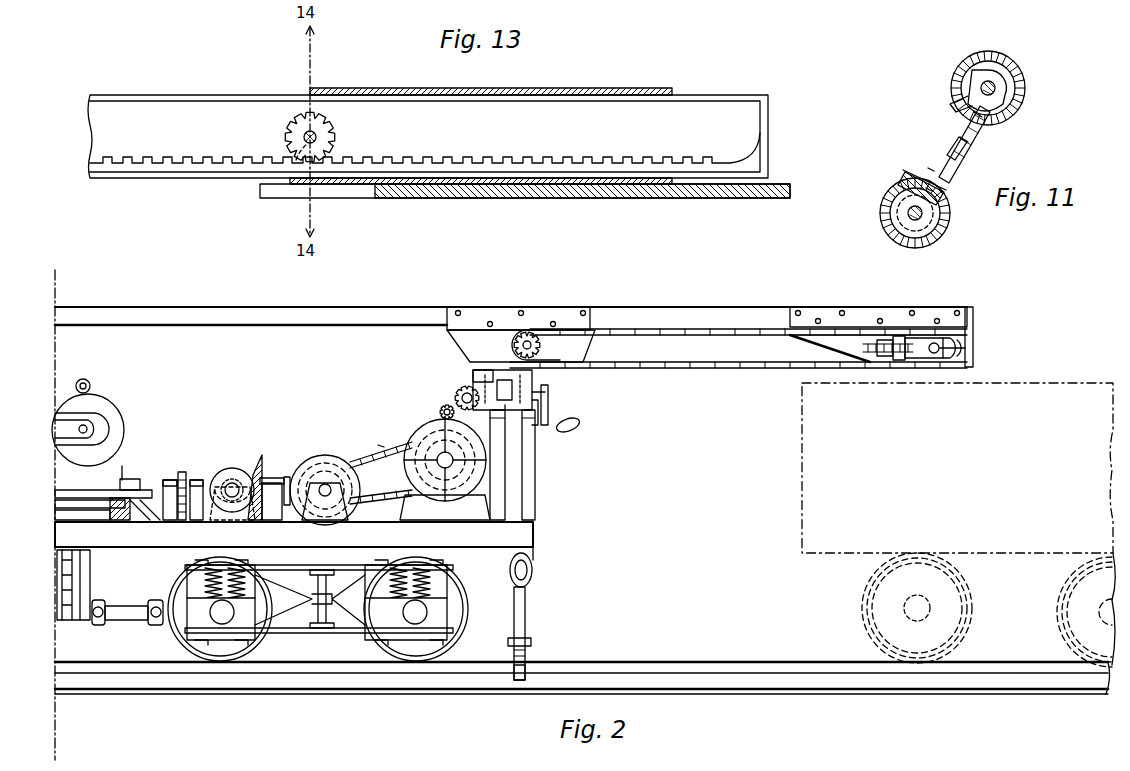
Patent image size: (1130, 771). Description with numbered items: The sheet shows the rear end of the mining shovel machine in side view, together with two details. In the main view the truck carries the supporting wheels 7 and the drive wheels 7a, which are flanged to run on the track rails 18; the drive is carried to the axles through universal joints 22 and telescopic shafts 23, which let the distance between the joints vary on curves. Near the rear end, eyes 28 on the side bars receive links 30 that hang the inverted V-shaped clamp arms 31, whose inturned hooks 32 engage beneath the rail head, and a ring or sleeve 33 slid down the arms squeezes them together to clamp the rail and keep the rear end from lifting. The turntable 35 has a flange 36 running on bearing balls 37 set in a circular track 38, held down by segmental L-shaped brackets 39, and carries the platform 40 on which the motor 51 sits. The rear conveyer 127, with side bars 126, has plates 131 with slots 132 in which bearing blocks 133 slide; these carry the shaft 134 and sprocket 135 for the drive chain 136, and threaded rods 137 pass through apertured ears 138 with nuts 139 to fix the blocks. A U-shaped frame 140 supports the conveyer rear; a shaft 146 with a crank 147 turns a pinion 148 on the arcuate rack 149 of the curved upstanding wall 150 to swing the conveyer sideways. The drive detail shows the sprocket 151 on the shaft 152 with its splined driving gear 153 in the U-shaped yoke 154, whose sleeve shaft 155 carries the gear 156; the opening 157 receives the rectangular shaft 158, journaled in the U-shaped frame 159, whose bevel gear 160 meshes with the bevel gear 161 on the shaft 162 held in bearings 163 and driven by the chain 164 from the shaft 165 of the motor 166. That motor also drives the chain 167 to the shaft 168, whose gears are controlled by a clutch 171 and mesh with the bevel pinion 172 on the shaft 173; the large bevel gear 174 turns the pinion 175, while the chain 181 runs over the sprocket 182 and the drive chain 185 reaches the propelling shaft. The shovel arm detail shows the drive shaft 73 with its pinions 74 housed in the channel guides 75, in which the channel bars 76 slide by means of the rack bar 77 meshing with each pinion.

In FIG. 2, the supporting wheels 7 is at (413, 650).
In FIG. 2, the drive wheels 7a is at (233, 650).
In FIG. 2, the track rails 18 is at (752, 662).
In FIG. 2, the universal joints 22 is at (158, 625).
In FIG. 2, the telescopic shafts 23 is at (126, 629).
In FIG. 2, the eyes 28 is at (536, 563).
In FIG. 2, the links 30 is at (535, 573).
In FIG. 2, the clamp arms 31 is at (526, 612).
In FIG. 2, the inturned hooks 32 is at (515, 665).
In FIG. 2, the ring or sleeve 33 is at (533, 641).
In FIG. 2, the turntable 35 is at (60, 504).
In FIG. 2, the flange 36 is at (58, 494).
In FIG. 2, the bearing balls 37 is at (118, 515).
In FIG. 2, the circular track 38 is at (85, 517).
In FIG. 2, the segmental L-shaped brackets 39 is at (152, 512).
In FIG. 13, the platform 40 is at (552, 199).
In FIG. 2, the motor 51 is at (107, 411).
In FIG. 13, the drive shaft of the shovel 73 is at (292, 162).
In FIG. 13, the pinions 74 is at (335, 134).
In FIG. 13, the channel guides 75 is at (590, 86).
In FIG. 13, the channel bars 76 is at (228, 96).
In FIG. 13, the rack bar 77 is at (510, 157).
In FIG. 2, the side bars 126 is at (338, 328).
In FIG. 2, the rear conveyer 127 is at (409, 299).
In FIG. 2, the plates 131 is at (840, 340).
In FIG. 2, the slots 132 is at (906, 362).
In FIG. 2, the bearing blocks 133 is at (950, 362).
In FIG. 2, the shaft 134 is at (937, 362).
In FIG. 2, the sprocket 135 is at (962, 349).
In FIG. 2, the drive chain 136 is at (728, 368).
In FIG. 2, the threaded rods 137 is at (868, 355).
In FIG. 2, the apertured ears 138 is at (895, 360).
In FIG. 2, the nuts 139 is at (905, 340).
In FIG. 2, the U-shaped frame 140 is at (502, 338).
In FIG. 2, the shaft 146 is at (536, 420).
In FIG. 2, the crank 147 is at (550, 408).
In FIG. 2, the pinion 148 is at (520, 385).
In FIG. 2, the arcuate rack 149 is at (508, 405).
In FIG. 2, the curved upstanding wall 150 is at (512, 505).
In FIG. 2, the sprocket 151 is at (570, 360).
In FIG. 11, the shaft 152 is at (1000, 88).
In FIG. 2, the shaft 152 is at (533, 344).
In FIG. 11, the driving gear 153 is at (1000, 76).
In FIG. 11, the U-shaped yoke 154 is at (1003, 102).
In FIG. 11, the sleeve shaft 155 is at (975, 143).
In FIG. 11, the gear 156 is at (955, 100).
In FIG. 11, the opening 157 is at (962, 132).
In FIG. 11, the rectangular shaft 158 is at (960, 157).
In FIG. 11, the U-shaped frame 159 is at (933, 168).
In FIG. 11, the bevel gear 160 is at (905, 180).
In FIG. 11, the bevel gear 161 is at (880, 226).
In FIG. 11, the shaft 162 is at (922, 216).
In FIG. 2, the shaft 162 is at (440, 409).
In FIG. 2, the bearings 163 is at (460, 395).
In FIG. 2, the chain 164 is at (470, 378).
In FIG. 2, the shaft 165 is at (445, 469).
In FIG. 2, the motor 166 is at (440, 470).
In FIG. 2, the chain 167 is at (381, 473).
In FIG. 2, the shaft 168 is at (388, 460).
In FIG. 2, the clutch 171 is at (327, 483).
In FIG. 2, the bevel pinion 172 is at (287, 476).
In FIG. 2, the shaft 173 is at (200, 475).
In FIG. 2, the large bevel gear 174 is at (258, 455).
In FIG. 2, the pinion 175 is at (226, 478).
In FIG. 2, the chain 181 is at (176, 480).
In FIG. 2, the sprocket 182 is at (181, 476).
In FIG. 2, the drive chain 185 is at (80, 578).